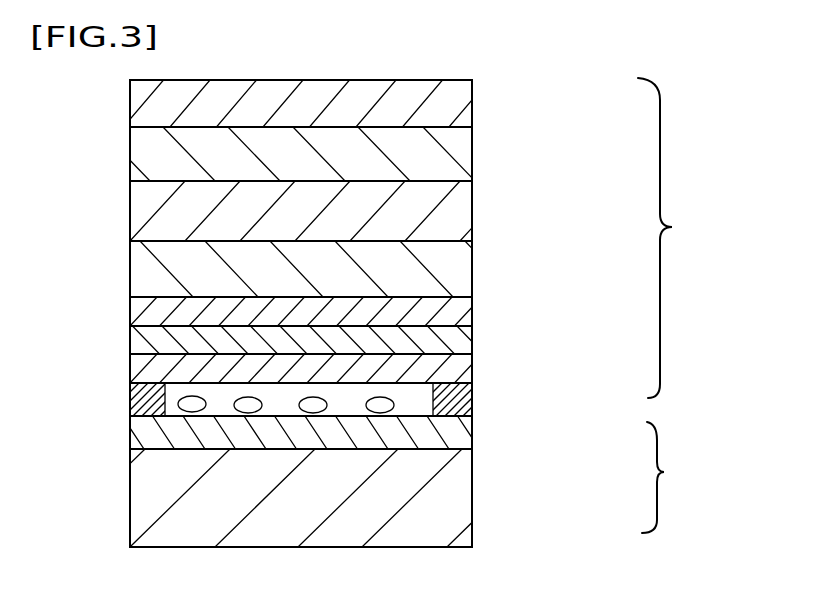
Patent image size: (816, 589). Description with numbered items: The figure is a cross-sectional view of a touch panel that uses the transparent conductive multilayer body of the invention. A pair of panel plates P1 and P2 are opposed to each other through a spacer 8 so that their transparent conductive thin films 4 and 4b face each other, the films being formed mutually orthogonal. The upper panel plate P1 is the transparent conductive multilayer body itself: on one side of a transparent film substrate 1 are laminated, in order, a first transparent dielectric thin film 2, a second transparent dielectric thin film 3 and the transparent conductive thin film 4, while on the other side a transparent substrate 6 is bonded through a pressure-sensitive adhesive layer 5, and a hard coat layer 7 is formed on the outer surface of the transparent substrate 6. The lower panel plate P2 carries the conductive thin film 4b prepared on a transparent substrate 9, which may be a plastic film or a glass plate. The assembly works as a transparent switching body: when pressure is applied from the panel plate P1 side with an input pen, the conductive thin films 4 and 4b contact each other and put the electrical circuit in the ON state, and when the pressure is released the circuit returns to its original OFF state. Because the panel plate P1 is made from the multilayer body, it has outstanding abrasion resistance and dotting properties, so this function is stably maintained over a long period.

The hard coat layer 7 is at (453, 102).
The transparent substrate 6 is at (457, 156).
The pressure-sensitive adhesive layer 5 is at (457, 212).
The transparent film substrate 1 is at (457, 266).
The first transparent dielectric thin film 2 is at (463, 315).
The second transparent dielectric thin film 3 is at (463, 342).
The transparent conductive thin film 4 is at (463, 370).
The spacer 8 is at (138, 410).
The transparent conductive thin film 4b is at (463, 430).
The layer 9 is at (453, 505).
The panel plate P1 is at (677, 238).
The panel plate P2 is at (674, 477).